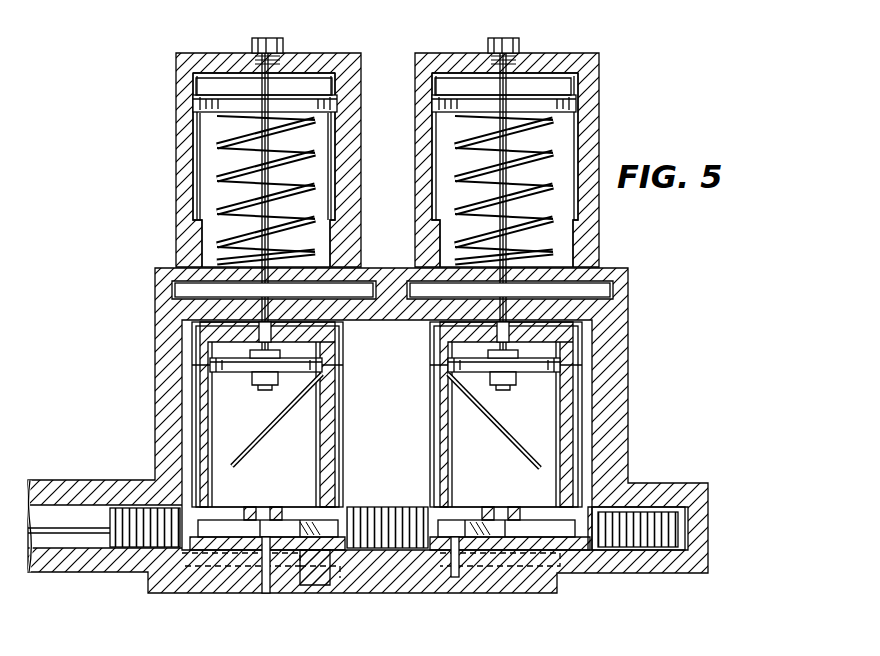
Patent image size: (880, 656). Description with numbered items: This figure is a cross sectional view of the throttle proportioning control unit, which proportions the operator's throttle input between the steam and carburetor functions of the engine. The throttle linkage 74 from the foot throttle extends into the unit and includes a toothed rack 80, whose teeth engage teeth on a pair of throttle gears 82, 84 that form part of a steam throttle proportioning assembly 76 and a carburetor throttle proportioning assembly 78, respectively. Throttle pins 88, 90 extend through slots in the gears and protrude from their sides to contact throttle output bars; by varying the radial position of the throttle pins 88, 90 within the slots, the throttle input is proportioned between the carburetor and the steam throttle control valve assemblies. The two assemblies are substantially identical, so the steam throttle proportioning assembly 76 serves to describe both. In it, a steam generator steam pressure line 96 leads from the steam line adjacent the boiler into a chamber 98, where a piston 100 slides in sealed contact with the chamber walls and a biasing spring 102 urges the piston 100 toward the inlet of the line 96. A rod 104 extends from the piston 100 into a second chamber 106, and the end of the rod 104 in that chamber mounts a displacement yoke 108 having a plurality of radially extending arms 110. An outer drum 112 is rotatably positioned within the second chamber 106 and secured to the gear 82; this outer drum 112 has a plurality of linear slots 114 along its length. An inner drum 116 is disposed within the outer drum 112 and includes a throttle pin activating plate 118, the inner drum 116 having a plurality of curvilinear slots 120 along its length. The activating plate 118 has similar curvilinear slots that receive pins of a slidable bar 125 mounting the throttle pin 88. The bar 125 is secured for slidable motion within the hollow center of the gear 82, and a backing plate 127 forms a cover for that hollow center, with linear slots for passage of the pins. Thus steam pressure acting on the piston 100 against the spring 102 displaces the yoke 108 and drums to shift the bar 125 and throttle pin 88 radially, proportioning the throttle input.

The throttle linkage 74 is at (153, 477).
The steam throttle proportioning assembly 76 is at (176, 113).
The carburetor throttle proportioning assembly 78 is at (599, 130).
The toothed rack 80 is at (127, 540).
The throttle gear 82 is at (302, 545).
The throttle gear 84 is at (571, 543).
The throttle pin 88 is at (251, 545).
The throttle pin 90 is at (451, 537).
The steam generator steam pressure line 96 is at (283, 44).
The chamber 98 is at (330, 143).
The piston 100 is at (342, 104).
The biasing spring 102 is at (316, 185).
The rod 104 is at (222, 200).
The second chamber 106 is at (345, 342).
The displacement yoke 108 is at (255, 385).
The radially extending arms 110 is at (345, 372).
The outer drum 112 is at (343, 500).
The linear slots 114 is at (343, 428).
The inner drum 116 is at (335, 460).
The throttle pin activating plate 118 is at (218, 506).
The curvilinear slots 120 is at (258, 436).
The slidable bar 125 is at (320, 542).
The backing plate 127 is at (290, 506).